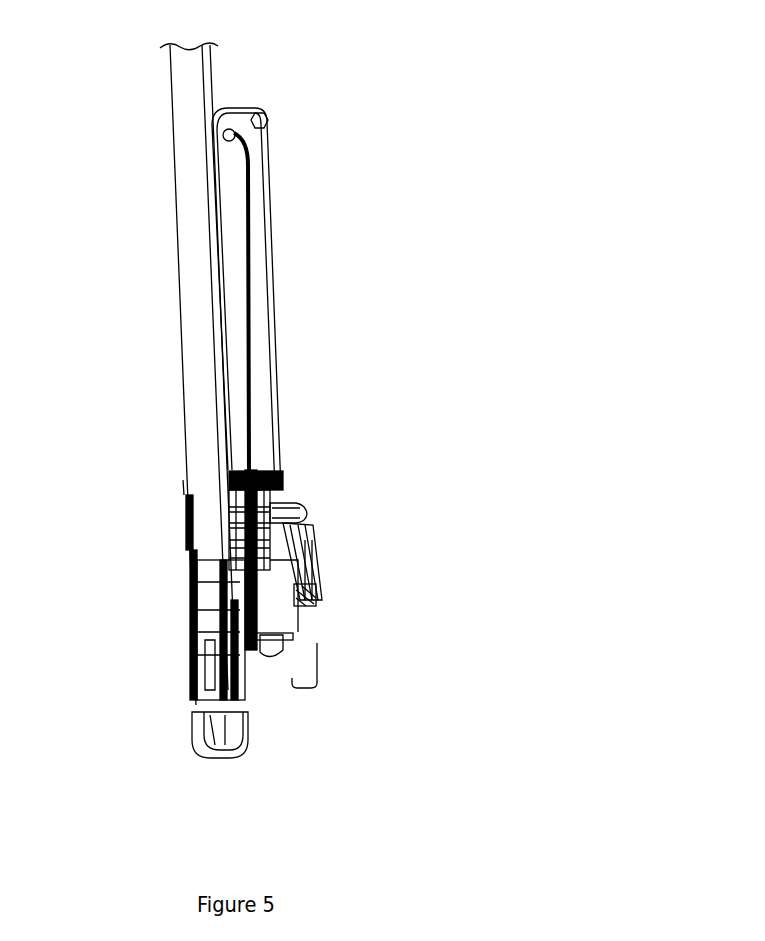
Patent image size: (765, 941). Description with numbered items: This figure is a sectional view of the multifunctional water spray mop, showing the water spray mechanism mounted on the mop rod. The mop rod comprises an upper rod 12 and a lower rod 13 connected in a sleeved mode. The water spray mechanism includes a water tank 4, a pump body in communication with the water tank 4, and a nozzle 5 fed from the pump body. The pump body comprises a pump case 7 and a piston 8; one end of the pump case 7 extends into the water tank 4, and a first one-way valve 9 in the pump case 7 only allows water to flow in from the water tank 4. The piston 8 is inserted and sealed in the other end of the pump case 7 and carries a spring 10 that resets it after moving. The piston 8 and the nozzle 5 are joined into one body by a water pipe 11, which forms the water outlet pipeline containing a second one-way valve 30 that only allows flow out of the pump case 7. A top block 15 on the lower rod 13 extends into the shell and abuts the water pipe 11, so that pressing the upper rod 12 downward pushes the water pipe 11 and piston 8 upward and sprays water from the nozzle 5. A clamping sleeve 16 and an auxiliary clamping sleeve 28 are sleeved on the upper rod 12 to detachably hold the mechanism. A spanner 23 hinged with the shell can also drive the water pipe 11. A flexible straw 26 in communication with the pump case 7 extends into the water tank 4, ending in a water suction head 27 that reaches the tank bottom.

The water tank 4 is at (270, 212).
The nozzle 5 is at (304, 683).
The pump case 7 is at (300, 538).
The piston 8 is at (315, 583).
The first one-way valve 9 is at (277, 468).
The spring 10 is at (280, 502).
The water pipe 11 is at (223, 610).
The upper rod 12 is at (187, 227).
The lower rod 13 is at (190, 658).
The top block 15 is at (210, 716).
The clamping sleeve 16 is at (190, 532).
The spanner 23 is at (307, 612).
The flexible straw 26 is at (253, 296).
The water suction head 27 is at (255, 112).
The auxiliary clamping sleeve 28 is at (184, 495).
The second one-way valve 30 is at (220, 565).